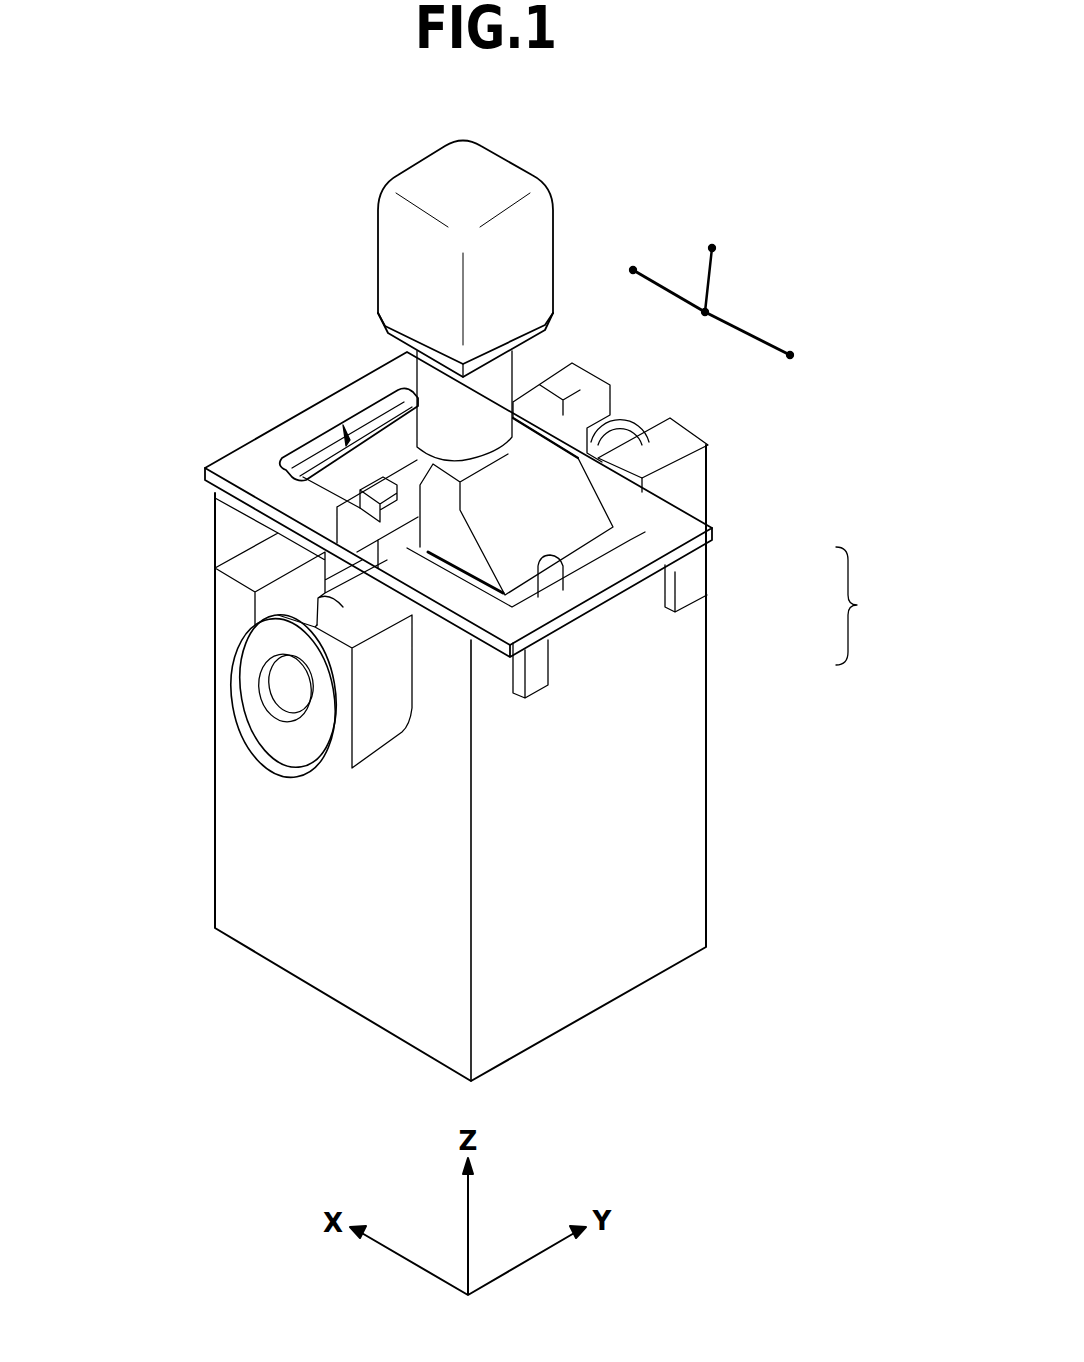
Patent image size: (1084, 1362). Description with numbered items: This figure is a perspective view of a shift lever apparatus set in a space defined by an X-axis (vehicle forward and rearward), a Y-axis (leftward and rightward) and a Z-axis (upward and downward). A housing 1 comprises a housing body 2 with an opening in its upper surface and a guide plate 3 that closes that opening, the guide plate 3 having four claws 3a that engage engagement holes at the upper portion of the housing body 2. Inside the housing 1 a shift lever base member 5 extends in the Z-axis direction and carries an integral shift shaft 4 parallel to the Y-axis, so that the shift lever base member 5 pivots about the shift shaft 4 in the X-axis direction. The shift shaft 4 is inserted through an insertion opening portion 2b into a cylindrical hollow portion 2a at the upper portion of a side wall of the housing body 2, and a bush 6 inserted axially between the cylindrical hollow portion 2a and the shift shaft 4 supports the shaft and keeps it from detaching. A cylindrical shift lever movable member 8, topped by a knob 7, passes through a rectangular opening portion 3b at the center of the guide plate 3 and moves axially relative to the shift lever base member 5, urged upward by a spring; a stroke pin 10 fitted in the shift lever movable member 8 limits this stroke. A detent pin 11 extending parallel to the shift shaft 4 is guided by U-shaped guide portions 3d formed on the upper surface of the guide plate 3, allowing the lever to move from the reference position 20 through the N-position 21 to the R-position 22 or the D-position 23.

The housing 1 is at (854, 606).
The housing body 2 is at (680, 630).
The cylindrical hollow portion 2a is at (300, 765).
The insertion opening portion 2b is at (287, 585).
The guide plate 3 is at (680, 532).
The claw 3a is at (541, 672).
The rectangular opening portion 3b is at (347, 443).
The U-shaped guide portion 3d is at (352, 535).
The shift shaft 4 is at (273, 689).
The shift lever base member 5 is at (580, 507).
The bush 6 is at (247, 638).
The knob 7 is at (390, 237).
The shift lever movable member 8 is at (425, 395).
The stroke pin 10 is at (555, 578).
The detent pin 11 is at (380, 488).
The reference position 20 is at (714, 249).
The N-position 21 is at (708, 310).
The R-position 22 is at (632, 268).
The D-position 23 is at (792, 354).